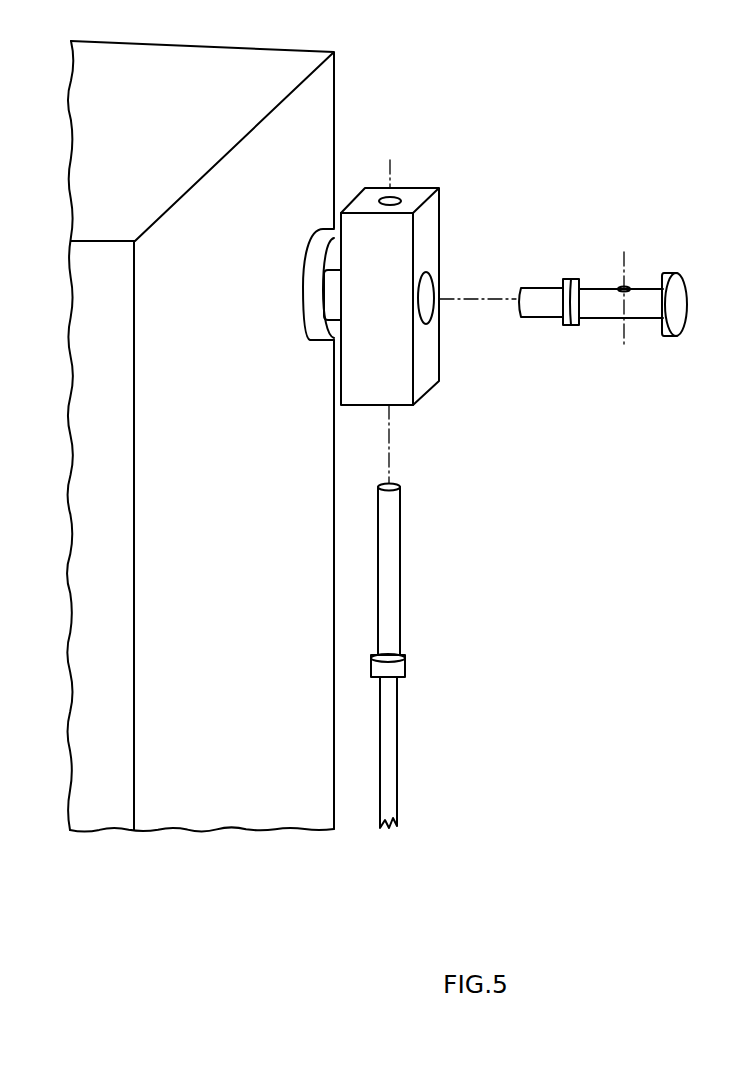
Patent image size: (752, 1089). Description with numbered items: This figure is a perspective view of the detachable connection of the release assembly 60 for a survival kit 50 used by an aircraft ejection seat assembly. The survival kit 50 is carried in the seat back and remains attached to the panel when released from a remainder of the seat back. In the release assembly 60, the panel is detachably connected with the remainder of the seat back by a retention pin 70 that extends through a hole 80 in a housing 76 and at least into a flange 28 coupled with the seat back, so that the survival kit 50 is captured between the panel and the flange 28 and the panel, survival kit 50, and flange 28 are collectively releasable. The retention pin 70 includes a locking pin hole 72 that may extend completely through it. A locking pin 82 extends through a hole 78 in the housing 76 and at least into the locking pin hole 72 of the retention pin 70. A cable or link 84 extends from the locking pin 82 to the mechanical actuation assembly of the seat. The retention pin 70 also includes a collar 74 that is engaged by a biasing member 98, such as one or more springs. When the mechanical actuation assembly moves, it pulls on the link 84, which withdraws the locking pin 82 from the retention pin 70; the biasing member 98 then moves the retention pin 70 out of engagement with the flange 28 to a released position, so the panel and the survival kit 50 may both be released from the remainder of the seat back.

The release assembly 60 is at (618, 81).
The survival kit 50 is at (240, 831).
The flange 28 is at (321, 228).
The biasing member 98 is at (316, 326).
The housing 76 is at (440, 235).
The hole 78 is at (402, 200).
The hole 80 is at (430, 322).
The locking pin hole 72 is at (644, 274).
The collar 74 is at (568, 325).
The retention pin 70 is at (667, 336).
The locking pin 82 is at (388, 551).
The link 84 is at (393, 710).